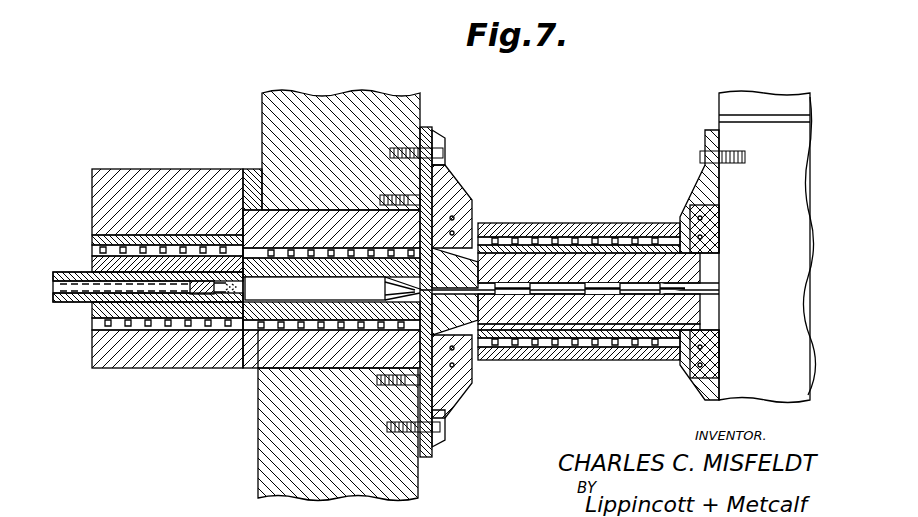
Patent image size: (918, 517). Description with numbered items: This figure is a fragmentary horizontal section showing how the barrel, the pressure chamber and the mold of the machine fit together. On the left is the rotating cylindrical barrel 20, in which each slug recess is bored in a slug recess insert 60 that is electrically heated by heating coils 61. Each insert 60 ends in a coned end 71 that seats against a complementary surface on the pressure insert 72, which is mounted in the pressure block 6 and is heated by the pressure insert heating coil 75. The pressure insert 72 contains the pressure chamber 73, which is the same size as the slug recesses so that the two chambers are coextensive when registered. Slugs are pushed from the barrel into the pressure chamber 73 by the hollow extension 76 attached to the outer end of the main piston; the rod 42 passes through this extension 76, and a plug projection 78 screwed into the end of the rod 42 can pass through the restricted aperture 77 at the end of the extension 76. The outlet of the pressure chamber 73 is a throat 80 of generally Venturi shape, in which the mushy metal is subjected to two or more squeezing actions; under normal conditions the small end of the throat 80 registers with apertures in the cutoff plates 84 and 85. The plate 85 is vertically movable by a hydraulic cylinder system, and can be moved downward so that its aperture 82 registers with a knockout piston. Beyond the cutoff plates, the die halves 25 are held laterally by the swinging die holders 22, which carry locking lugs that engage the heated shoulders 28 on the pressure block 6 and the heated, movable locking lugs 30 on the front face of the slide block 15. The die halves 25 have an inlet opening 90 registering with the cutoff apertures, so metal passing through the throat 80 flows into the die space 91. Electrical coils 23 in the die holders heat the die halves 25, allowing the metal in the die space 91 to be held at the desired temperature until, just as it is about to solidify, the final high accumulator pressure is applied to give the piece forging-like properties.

The pressure block 6 is at (330, 122).
The slide block 15 is at (773, 275).
The cylindrical barrel 20 is at (133, 355).
The swinging die holders 22 is at (525, 228).
The electrical coils 23 is at (600, 240).
The die halves 25 is at (628, 260).
The shoulders 28 is at (430, 307).
The locking lugs 30 is at (700, 200).
The rod 42 is at (85, 287).
The slug recess insert 60 is at (92, 265).
The heating coils 61 is at (95, 250).
The coned end 71 is at (243, 262).
The pressure insert 72 is at (258, 265).
The pressure chamber 73 is at (297, 300).
The pressure insert heating coil 75 is at (246, 310).
The extension 76 is at (72, 303).
The restricted aperture 77 is at (240, 300).
The plug projection 78 is at (220, 283).
The throat 80 is at (392, 288).
The aperture 82 is at (455, 352).
The cutoff plate 84 is at (430, 450).
The cutoff plate 85 is at (452, 200).
The inlet opening 90 is at (470, 262).
The die space 91 is at (485, 345).